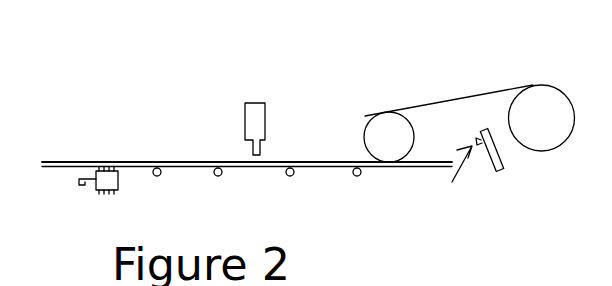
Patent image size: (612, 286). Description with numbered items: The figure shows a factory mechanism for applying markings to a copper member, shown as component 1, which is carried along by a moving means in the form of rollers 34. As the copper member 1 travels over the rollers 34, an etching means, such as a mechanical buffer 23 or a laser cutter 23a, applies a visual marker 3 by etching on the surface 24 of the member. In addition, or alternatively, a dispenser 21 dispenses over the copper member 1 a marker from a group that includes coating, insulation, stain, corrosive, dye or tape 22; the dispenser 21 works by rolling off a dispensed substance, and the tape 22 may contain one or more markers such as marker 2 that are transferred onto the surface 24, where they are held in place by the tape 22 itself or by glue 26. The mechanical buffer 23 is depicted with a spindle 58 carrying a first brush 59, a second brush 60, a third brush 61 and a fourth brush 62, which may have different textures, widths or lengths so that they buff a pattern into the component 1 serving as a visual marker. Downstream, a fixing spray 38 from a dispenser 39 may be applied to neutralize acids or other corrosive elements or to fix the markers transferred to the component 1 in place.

The copper member 1 is at (55, 167).
The marker 2 is at (414, 160).
The visual marker 3 is at (390, 163).
The dispenser 21 is at (469, 123).
The tape 22 is at (440, 102).
The mechanical buffer 23 is at (118, 180).
The laser cutter 23a is at (255, 115).
The surface 24 is at (150, 162).
The glue 26 is at (368, 148).
The rollers 34 is at (222, 173).
The fixing spray 38 is at (452, 182).
The dispenser 39 is at (483, 162).
The spindle 58 is at (87, 190).
The first brush 59 is at (88, 163).
The second brush 60 is at (99, 166).
The third brush 61 is at (105, 166).
The fourth brush 62 is at (112, 166).